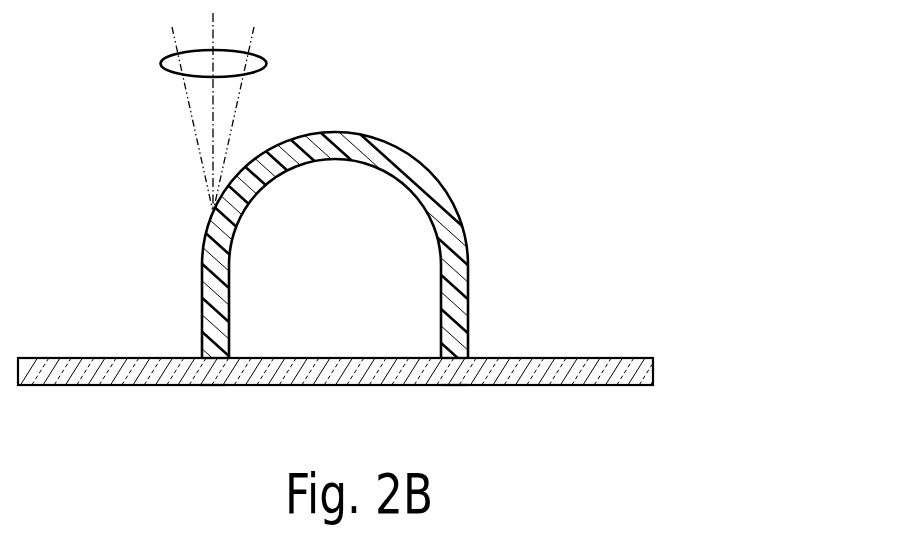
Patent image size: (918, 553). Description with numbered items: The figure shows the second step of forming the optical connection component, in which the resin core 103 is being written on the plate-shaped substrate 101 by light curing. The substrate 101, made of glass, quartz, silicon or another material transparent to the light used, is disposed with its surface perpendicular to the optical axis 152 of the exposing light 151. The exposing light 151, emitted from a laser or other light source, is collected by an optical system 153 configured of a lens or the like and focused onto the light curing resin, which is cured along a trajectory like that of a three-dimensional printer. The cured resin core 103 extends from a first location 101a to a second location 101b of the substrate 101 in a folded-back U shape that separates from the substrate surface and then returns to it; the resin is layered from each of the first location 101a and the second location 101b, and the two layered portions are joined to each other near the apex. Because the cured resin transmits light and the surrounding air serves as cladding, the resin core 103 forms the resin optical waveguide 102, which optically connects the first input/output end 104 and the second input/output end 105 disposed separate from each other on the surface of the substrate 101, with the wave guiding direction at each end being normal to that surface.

The substrate 101 is at (654, 372).
The first location 101a is at (213, 386).
The second location 101b is at (455, 386).
The resin optical waveguide 102 is at (377, 276).
The resin core 103 is at (333, 160).
The first input/output end 104 is at (214, 357).
The second input/output end 105 is at (455, 357).
The exposing light 151 is at (185, 112).
The optical axis 152 is at (213, 122).
The optical system 153 is at (267, 63).